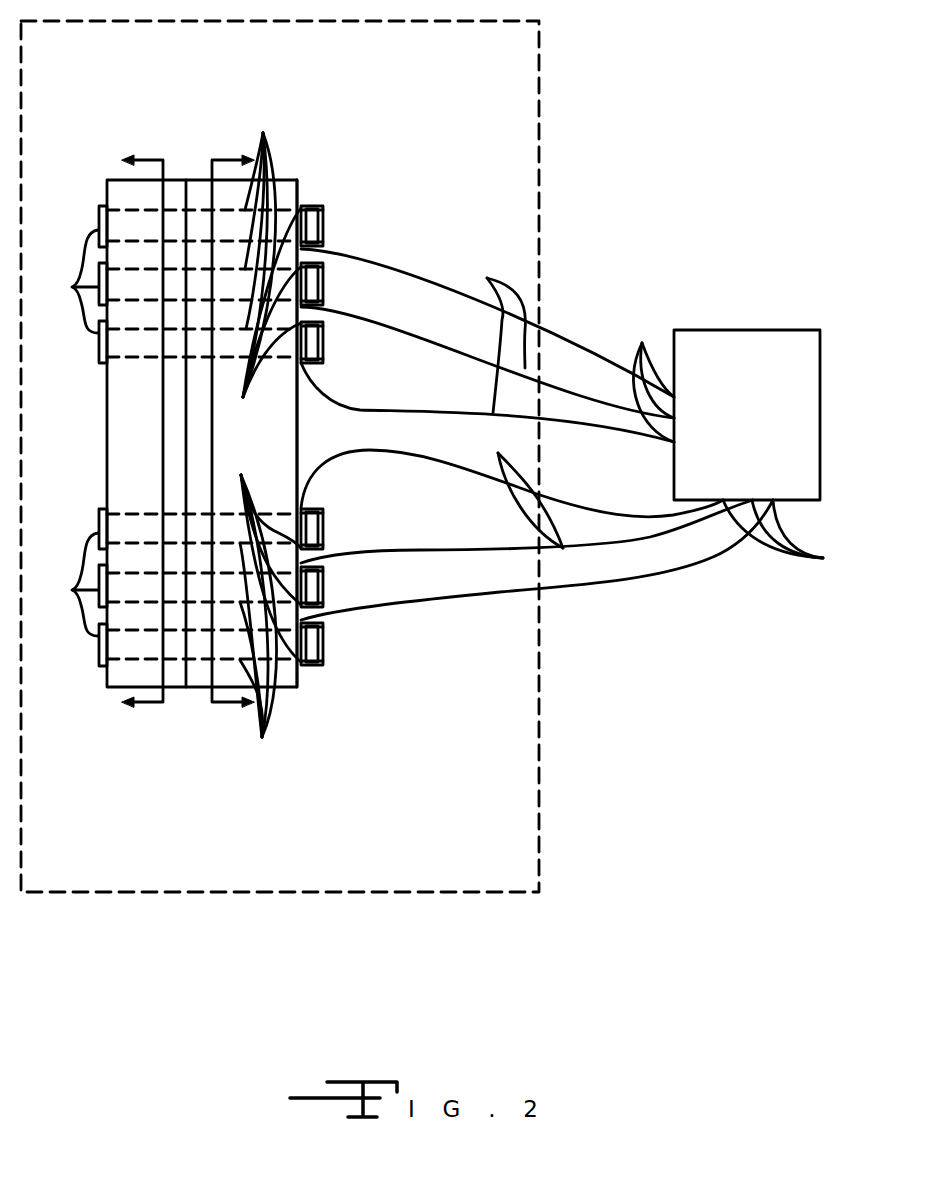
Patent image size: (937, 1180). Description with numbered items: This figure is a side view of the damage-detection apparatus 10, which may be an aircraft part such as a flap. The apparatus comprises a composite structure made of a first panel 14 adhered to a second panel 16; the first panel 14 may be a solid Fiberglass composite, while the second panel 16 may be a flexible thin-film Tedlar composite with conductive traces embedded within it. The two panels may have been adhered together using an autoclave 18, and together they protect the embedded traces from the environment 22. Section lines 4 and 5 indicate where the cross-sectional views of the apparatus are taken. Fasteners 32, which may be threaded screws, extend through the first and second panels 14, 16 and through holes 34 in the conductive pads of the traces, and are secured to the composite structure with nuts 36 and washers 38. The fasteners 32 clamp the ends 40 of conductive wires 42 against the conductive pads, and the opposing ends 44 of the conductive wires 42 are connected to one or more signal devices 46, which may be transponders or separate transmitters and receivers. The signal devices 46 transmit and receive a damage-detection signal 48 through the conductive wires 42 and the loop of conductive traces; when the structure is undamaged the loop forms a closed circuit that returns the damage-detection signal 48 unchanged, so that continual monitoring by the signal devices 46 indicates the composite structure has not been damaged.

The section line 4- 4 is at (142, 430).
The section line 5- 5 is at (233, 430).
The damage-detection apparatus 10 is at (342, 150).
The first panel 14 is at (127, 438).
The second panel 16 is at (290, 434).
The autoclave 18 is at (540, 162).
The environment 22 is at (488, 715).
The fasteners 32 is at (72, 436).
The holes 34 is at (256, 436).
The nuts 36 is at (318, 220).
The washers 38 is at (316, 227).
The ends of conductive wires 40 is at (263, 435).
The conductive wires 42 is at (537, 444).
The damage-detection signal 48 is at (645, 622).
The opposing ends of conductive wires 44 is at (741, 445).
The signal devices 46 is at (770, 348).